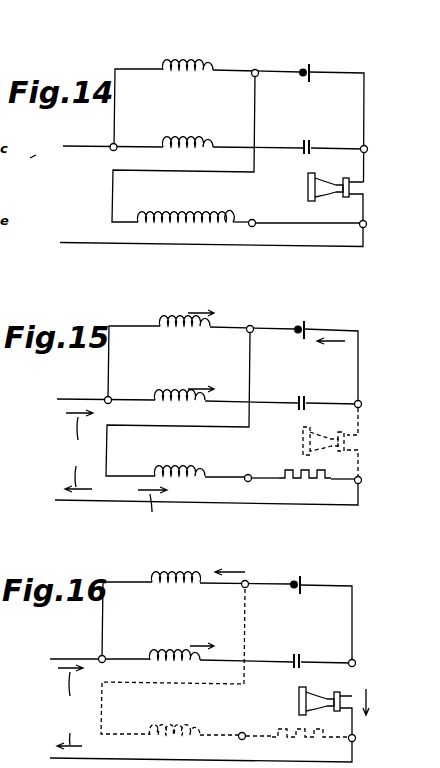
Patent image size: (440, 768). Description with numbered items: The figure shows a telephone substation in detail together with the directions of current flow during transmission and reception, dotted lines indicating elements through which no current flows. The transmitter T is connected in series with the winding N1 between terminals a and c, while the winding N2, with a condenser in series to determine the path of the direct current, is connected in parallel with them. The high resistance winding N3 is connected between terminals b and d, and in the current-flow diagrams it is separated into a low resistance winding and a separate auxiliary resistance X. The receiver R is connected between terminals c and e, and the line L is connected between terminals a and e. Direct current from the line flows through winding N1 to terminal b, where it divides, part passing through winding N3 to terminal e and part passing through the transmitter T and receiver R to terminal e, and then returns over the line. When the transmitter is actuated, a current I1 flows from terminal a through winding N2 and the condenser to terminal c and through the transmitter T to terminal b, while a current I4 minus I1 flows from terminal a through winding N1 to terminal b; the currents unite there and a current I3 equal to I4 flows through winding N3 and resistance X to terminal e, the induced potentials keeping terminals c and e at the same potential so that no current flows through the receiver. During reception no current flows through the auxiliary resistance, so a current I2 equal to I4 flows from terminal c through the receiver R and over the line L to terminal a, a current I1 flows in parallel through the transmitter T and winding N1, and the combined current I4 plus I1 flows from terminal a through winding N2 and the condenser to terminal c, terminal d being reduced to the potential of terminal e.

In FIG. 14, the winding N1 is at (187, 57).
In FIG. 14, the winding N2 is at (187, 134).
In FIG. 14, the high resistance winding N3 is at (197, 229).
In FIG. 14, the transmitter T is at (312, 65).
In FIG. 14, the receiver R is at (338, 182).
In FIG. 14, the line L is at (88, 150).
In FIG. 15, the auxiliary resistance X is at (305, 489).
In FIG. 16, the auxiliary resistance X is at (300, 733).
In FIG. 14, the terminal a is at (106, 138).
In FIG. 15, the terminal a is at (101, 392).
In FIG. 16, the terminal a is at (95, 650).
In FIG. 14, the terminal b is at (256, 63).
In FIG. 15, the terminal b is at (253, 319).
In FIG. 16, the terminal b is at (253, 595).
In FIG. 14, the terminal c is at (370, 151).
In FIG. 15, the terminal c is at (365, 406).
In FIG. 16, the terminal c is at (359, 666).
In FIG. 14, the terminal d is at (257, 233).
In FIG. 15, the terminal d is at (251, 468).
In FIG. 16, the terminal d is at (245, 725).
In FIG. 14, the terminal e is at (370, 226).
In FIG. 15, the terminal e is at (366, 482).
In FIG. 16, the terminal e is at (359, 740).
In FIG. 15, the current I1 is at (239, 351).
In FIG. 16, the current I1 is at (195, 610).
In FIG. 16, the current I2 is at (205, 697).
In FIG. 15, the current I3 is at (152, 509).
In FIG. 15, the current I4 is at (79, 451).
In FIG. 16, the current I4 is at (70, 707).